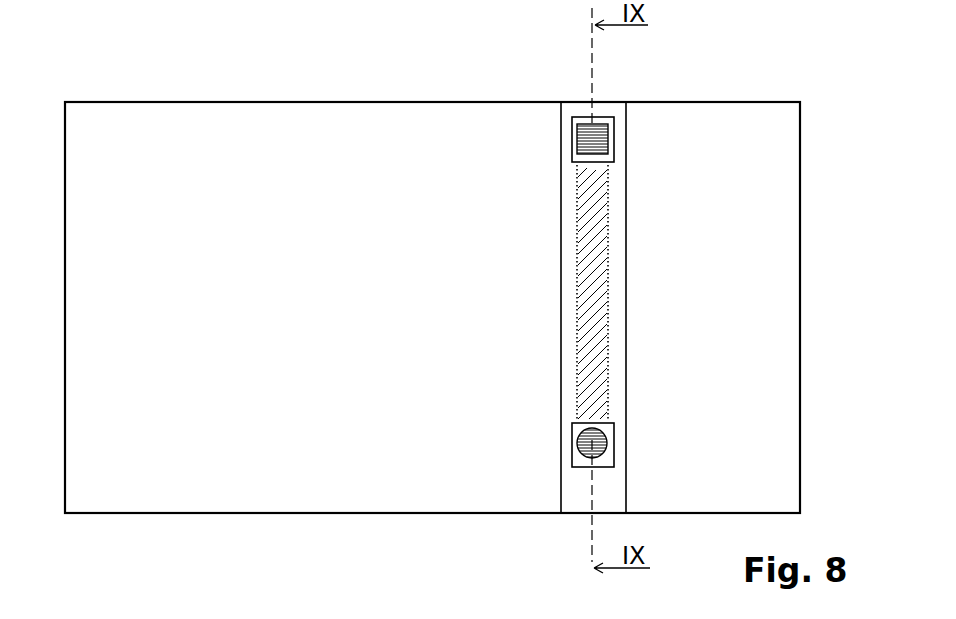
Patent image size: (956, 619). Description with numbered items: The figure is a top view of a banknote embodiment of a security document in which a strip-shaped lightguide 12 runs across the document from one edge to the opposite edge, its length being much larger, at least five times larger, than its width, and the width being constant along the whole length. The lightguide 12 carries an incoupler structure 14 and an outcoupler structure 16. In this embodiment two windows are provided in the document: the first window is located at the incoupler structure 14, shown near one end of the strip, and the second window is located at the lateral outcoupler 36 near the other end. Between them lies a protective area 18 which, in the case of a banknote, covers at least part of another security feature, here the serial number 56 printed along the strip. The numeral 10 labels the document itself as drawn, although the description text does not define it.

The security document 10 is at (473, 102).
The lightguide 12 is at (627, 423).
The incoupler structure 14 is at (592, 455).
The outcoupler structure 16 is at (597, 185).
The protective area 18 is at (603, 297).
The lateral outcoupler 36 is at (591, 128).
The serial number 56 is at (597, 248).